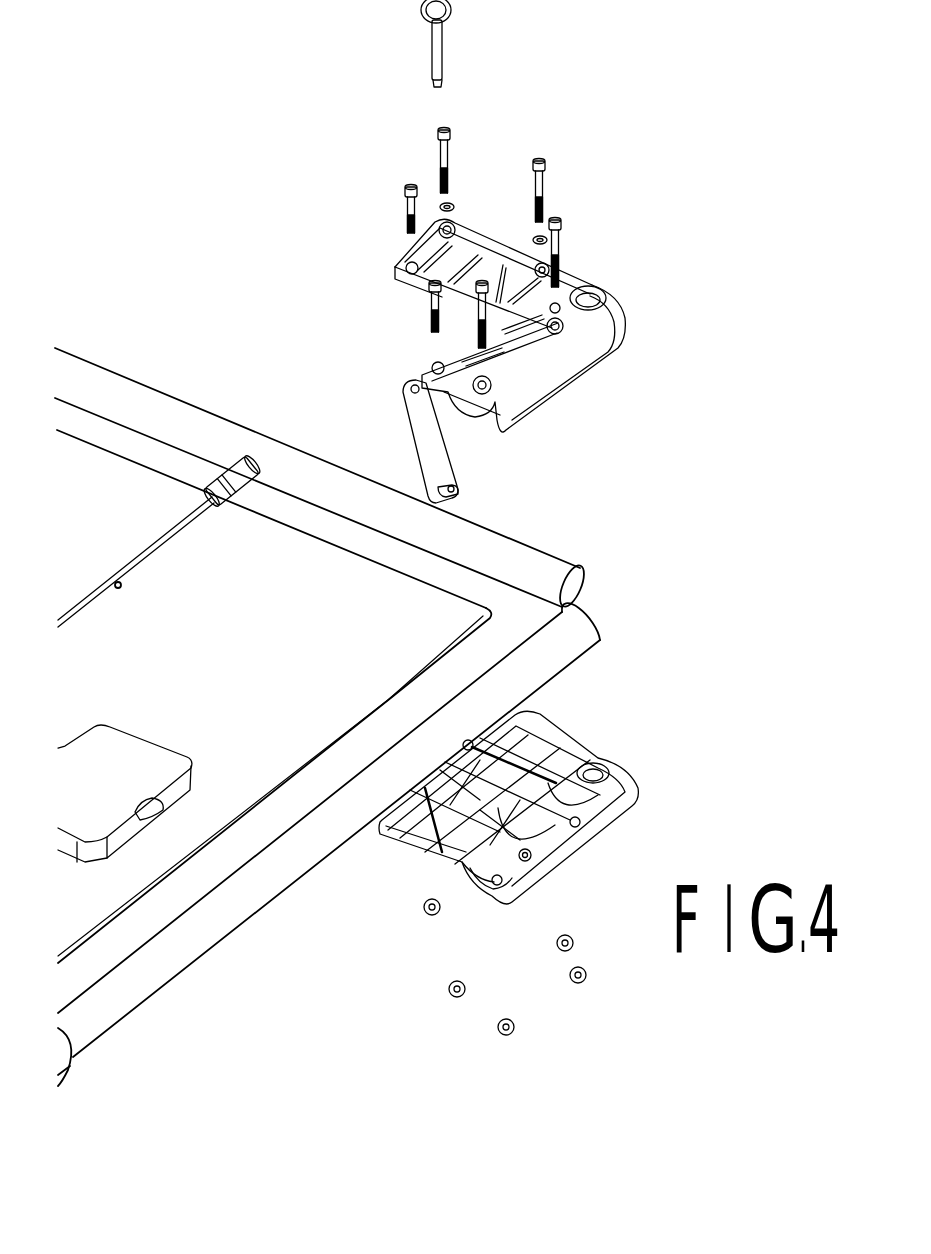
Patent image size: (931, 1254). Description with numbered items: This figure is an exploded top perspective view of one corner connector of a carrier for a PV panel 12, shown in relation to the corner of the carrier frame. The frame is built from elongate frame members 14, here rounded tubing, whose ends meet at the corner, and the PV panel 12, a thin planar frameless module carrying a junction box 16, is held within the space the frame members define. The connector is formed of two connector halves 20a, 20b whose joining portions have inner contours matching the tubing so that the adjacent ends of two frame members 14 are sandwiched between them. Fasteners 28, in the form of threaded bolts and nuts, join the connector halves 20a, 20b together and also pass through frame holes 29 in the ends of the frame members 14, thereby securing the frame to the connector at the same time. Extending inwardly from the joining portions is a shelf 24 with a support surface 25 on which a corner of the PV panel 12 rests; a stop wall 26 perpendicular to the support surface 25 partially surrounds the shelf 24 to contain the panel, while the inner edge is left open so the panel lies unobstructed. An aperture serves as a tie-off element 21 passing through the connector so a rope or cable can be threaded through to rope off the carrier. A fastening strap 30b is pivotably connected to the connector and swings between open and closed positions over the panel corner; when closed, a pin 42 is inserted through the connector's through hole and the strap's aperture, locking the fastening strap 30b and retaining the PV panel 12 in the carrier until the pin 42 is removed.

The PV panel 12 is at (298, 655).
The frame member 14 is at (196, 410).
The junction box 16 is at (142, 794).
The connector half 20a is at (548, 382).
The connector half 20b is at (545, 875).
The tie-off element 21 is at (598, 296).
The shelf 24 is at (387, 830).
The support surface 25 is at (422, 815).
The stop wall 26 is at (475, 763).
The fasteners 28 is at (555, 243).
The frame hole 29 is at (570, 604).
The fastening strap 30b is at (412, 437).
The pin 42 is at (433, 47).